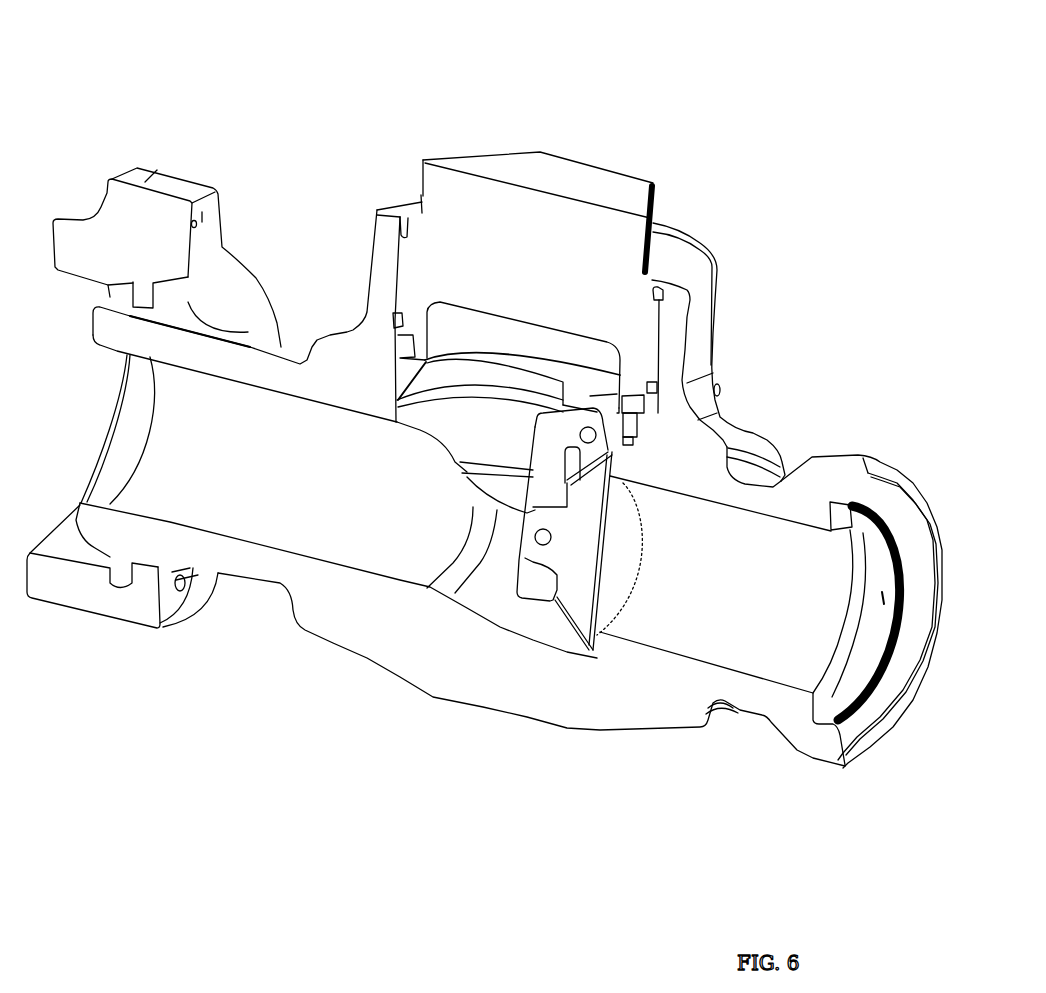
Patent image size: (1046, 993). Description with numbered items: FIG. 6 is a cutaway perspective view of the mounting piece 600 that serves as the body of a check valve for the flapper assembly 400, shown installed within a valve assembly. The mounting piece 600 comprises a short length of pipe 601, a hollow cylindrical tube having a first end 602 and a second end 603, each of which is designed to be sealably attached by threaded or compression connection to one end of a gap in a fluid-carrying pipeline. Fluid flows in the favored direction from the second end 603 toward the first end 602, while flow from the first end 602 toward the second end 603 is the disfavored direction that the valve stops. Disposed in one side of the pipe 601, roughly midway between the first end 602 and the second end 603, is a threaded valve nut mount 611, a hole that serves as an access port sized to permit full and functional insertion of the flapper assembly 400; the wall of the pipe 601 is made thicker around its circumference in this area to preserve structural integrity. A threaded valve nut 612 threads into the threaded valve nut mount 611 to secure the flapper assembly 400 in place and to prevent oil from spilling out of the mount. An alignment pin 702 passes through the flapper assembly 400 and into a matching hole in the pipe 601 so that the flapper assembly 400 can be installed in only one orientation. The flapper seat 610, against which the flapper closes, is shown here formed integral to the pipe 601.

The mounting piece 600 is at (320, 140).
The pipe 601 is at (370, 641).
The first end 602 is at (105, 528).
The second end 603 is at (861, 453).
The flapper seat 610 is at (604, 657).
The threaded valve nut mount 611 is at (718, 252).
The threaded valve nut 612 is at (539, 150).
The flapper assembly 400 is at (474, 375).
The alignment pin 702 is at (635, 449).